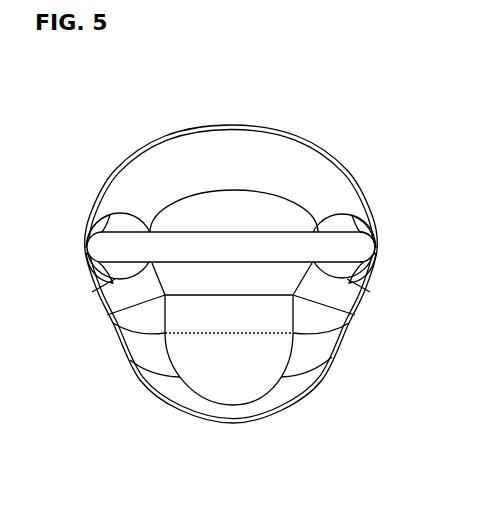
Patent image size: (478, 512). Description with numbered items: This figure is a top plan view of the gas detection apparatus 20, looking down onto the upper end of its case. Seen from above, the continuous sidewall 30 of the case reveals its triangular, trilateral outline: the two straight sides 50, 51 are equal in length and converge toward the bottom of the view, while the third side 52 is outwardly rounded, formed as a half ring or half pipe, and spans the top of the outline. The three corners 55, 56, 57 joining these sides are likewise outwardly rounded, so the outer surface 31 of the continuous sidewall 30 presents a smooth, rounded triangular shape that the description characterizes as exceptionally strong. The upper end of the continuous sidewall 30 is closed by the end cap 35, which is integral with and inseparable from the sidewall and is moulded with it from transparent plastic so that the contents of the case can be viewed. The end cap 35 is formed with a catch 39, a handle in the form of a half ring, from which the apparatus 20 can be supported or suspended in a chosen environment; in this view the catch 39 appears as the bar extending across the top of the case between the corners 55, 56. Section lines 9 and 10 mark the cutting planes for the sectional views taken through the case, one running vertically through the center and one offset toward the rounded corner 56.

The section line 9- 9 is at (233, 70).
The section line 10- 10 is at (333, 97).
The apparatus 20 is at (432, 214).
The continuous sidewall 30 is at (340, 352).
The outer surface 31 is at (138, 381).
The end cap 35 is at (338, 190).
The catch 39 is at (234, 245).
The side 50 is at (108, 316).
The side 51 is at (352, 317).
The side 52 is at (162, 138).
The corner 55 is at (84, 249).
The corner 56 is at (377, 247).
The corner 57 is at (228, 422).